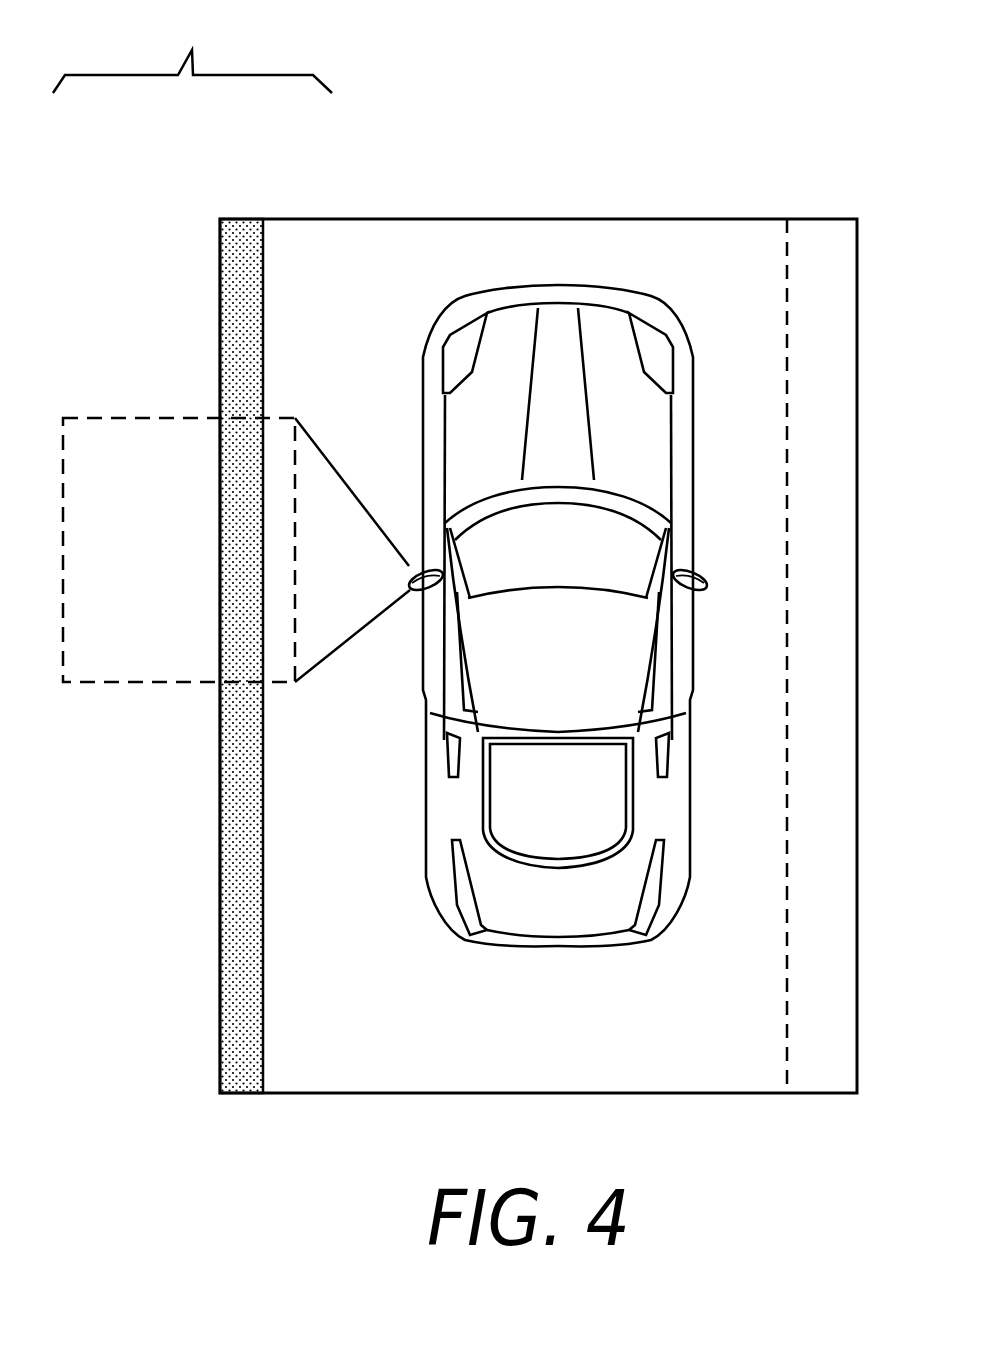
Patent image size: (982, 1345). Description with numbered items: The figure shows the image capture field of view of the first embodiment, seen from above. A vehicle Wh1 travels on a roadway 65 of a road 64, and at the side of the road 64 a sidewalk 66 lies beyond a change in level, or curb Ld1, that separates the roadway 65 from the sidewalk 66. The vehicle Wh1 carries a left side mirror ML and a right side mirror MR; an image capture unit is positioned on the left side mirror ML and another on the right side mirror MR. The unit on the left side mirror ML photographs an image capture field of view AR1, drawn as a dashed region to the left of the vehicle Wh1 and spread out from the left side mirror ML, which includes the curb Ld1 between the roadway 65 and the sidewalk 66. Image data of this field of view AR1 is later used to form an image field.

The road 64 is at (217, 32).
The roadway 65 is at (316, 306).
The sidewalk 66 is at (148, 328).
The vehicle Wh1 is at (575, 271).
The left side mirror ML is at (404, 598).
The right side mirror MR is at (698, 598).
The image capture field of view AR1 is at (130, 683).
The change in level (curb) Ld1 is at (255, 1009).